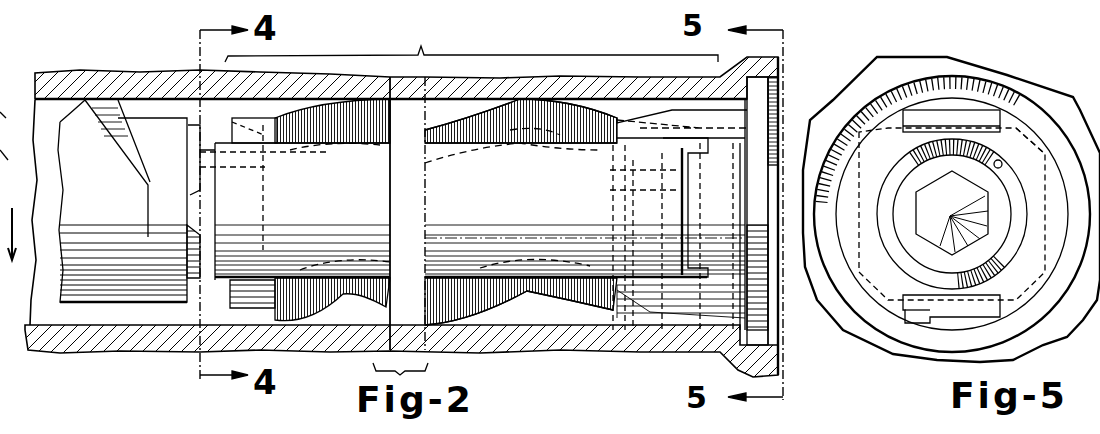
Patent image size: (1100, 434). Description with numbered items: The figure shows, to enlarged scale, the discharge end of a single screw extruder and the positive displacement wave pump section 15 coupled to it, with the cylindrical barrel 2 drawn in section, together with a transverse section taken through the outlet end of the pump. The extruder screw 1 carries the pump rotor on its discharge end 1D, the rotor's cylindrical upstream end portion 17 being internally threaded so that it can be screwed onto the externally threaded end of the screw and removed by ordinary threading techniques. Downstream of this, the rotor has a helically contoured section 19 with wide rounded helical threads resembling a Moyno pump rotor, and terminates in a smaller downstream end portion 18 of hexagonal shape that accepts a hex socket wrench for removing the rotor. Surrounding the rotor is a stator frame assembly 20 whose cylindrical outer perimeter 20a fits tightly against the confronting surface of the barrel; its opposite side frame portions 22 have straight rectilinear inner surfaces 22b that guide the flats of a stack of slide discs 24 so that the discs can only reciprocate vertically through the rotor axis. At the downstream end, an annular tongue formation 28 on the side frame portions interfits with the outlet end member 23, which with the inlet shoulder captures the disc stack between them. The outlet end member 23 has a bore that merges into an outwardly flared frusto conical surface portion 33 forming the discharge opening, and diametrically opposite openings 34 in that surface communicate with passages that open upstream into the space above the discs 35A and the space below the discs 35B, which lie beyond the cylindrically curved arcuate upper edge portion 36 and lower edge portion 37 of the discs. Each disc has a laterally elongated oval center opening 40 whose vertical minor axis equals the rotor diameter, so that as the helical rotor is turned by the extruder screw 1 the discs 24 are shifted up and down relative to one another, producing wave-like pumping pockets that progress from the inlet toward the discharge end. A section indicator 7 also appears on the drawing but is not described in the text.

In FIG. 2, the extruder screw 1 is at (98, 295).
In FIG. 2, the discharge end 1D is at (199, 133).
In FIG. 2, the cylindrical barrel 2 is at (138, 70).
In FIG. 2, the section arrow 7 is at (10, 255).
In FIG. 2, the positive displacement wave pump section 15 is at (471, 196).
In FIG. 2, the cylindrical upstream end portion 17 is at (203, 180).
In FIG. 5, the downstream end portion 18 is at (927, 228).
In FIG. 2, the helically contoured section 19 is at (497, 145).
In FIG. 5, the helically contoured section 19 is at (985, 245).
In FIG. 2, the stator frame assembly 20 is at (333, 195).
In FIG. 5, the stator frame assembly 20 is at (845, 188).
In FIG. 5, the cylindrical outer perimeter 20a is at (847, 233).
In FIG. 2, the side frame portion 22 is at (6, 150).
In FIG. 5, the side frame portion 22 is at (1052, 168).
In FIG. 2, the rectilinear inner surface 22b is at (14, 113).
In FIG. 2, the outlet end member 23 is at (775, 100).
In FIG. 5, the outlet end member 23 is at (1018, 100).
In FIG. 2, the slide discs 24 is at (495, 110).
In FIG. 5, the slide discs 24 is at (963, 145).
In FIG. 2, the annular tongue formation 28 is at (680, 150).
In FIG. 5, the frusto conical surface portion 33 is at (1005, 278).
In FIG. 5, the openings 34 is at (945, 110).
In FIG. 2, the space above the discs 35A is at (455, 112).
In FIG. 2, the space below the discs 35B is at (540, 312).
In FIG. 2, the upper edge portion 36 is at (592, 112).
In FIG. 5, the upper edge portion 36 is at (920, 117).
In FIG. 2, the lower edge portion 37 is at (480, 318).
In FIG. 5, the lower edge portion 37 is at (926, 318).
In FIG. 5, the center opening 40 is at (1002, 165).